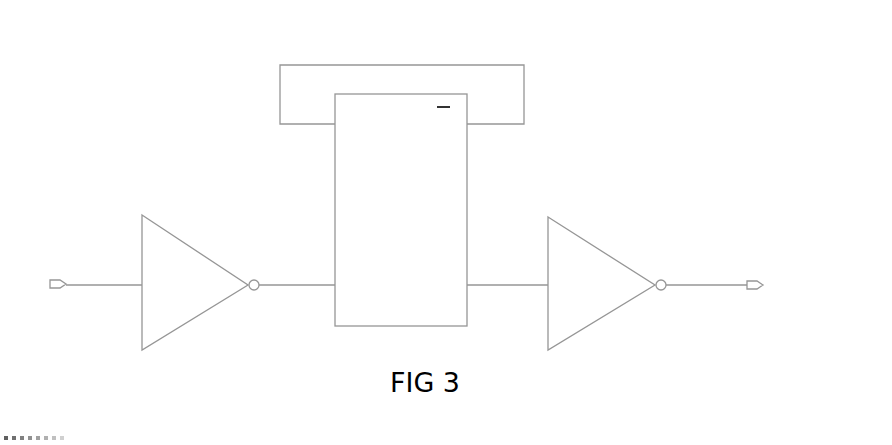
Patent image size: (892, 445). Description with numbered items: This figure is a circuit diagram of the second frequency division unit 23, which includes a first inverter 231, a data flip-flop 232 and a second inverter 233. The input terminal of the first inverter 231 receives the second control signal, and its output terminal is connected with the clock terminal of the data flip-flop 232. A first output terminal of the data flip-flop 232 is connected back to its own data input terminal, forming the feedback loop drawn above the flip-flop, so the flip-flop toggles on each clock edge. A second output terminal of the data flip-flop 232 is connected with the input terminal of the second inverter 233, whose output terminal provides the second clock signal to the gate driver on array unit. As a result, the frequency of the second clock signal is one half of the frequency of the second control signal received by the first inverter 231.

The second frequency division unit 23 is at (413, 21).
The first inverter 231 is at (197, 248).
The data flip-flop 232 is at (467, 213).
The second inverter 233 is at (600, 248).